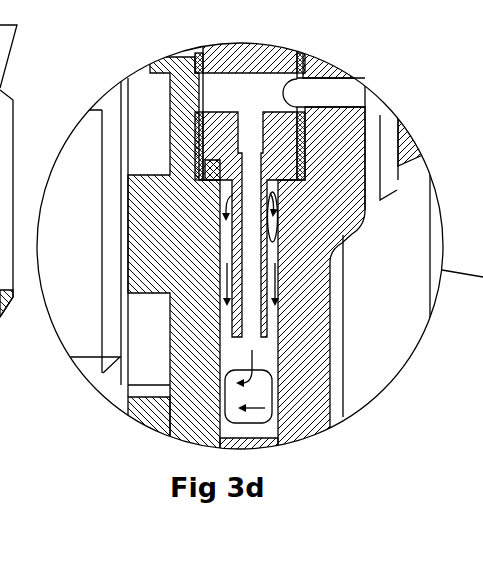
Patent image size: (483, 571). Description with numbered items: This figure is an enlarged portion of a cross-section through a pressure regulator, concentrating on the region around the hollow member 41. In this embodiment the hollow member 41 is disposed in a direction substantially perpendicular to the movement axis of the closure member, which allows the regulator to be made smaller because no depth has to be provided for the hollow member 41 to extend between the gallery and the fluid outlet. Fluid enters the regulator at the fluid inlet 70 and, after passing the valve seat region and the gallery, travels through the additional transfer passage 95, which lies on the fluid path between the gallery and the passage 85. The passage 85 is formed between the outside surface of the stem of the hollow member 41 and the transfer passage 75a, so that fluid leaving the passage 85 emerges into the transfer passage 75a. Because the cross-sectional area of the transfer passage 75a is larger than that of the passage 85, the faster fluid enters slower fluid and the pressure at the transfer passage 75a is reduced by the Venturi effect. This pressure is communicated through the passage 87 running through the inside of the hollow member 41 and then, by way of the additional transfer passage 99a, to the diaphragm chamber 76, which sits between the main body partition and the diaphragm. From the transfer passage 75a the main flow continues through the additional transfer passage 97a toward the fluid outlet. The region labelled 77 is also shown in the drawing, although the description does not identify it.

The fluid inlet 70 is at (5, 180).
The hollow member 41 is at (233, 323).
The chamber 77 is at (248, 93).
The transfer passage 99a is at (327, 92).
The diaphragm chamber 76 is at (373, 114).
The passage 87 is at (248, 232).
The transfer passage 95 is at (330, 290).
The passage 85 is at (280, 330).
The transfer passage 75a is at (252, 347).
The transfer passage 97a is at (243, 398).